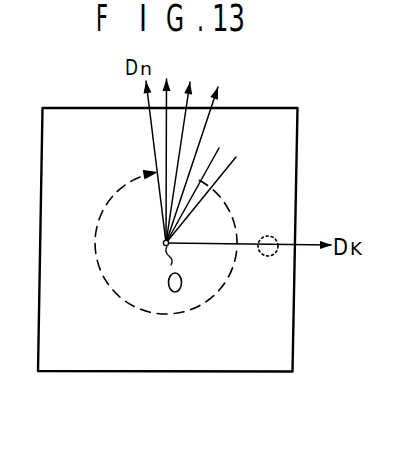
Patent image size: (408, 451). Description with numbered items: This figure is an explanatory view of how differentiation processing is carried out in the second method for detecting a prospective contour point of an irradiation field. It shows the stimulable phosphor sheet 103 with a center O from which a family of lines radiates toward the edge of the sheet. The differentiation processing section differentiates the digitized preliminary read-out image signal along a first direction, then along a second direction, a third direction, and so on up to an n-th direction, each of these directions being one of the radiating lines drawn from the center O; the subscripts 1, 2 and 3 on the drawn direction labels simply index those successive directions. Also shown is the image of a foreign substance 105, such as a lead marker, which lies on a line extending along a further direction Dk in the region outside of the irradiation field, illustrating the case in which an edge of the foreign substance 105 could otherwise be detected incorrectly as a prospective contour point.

The stimulable phosphor sheet 103 is at (287, 108).
The foreign substance 105 is at (276, 253).
The direction D1 1 is at (167, 147).
The direction D2 2 is at (189, 150).
The direction D3 3 is at (206, 154).